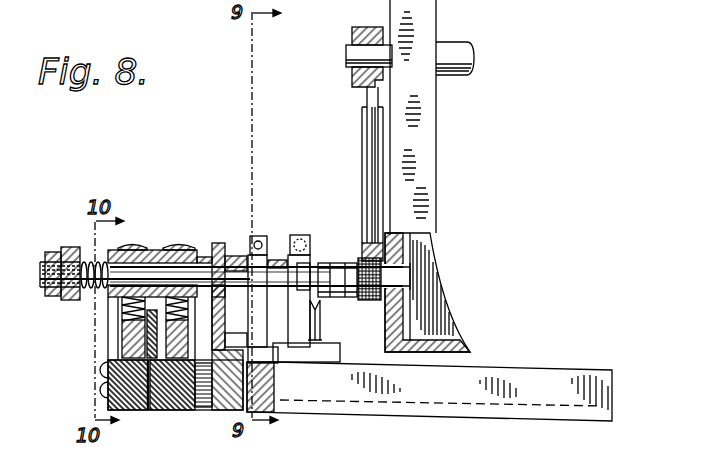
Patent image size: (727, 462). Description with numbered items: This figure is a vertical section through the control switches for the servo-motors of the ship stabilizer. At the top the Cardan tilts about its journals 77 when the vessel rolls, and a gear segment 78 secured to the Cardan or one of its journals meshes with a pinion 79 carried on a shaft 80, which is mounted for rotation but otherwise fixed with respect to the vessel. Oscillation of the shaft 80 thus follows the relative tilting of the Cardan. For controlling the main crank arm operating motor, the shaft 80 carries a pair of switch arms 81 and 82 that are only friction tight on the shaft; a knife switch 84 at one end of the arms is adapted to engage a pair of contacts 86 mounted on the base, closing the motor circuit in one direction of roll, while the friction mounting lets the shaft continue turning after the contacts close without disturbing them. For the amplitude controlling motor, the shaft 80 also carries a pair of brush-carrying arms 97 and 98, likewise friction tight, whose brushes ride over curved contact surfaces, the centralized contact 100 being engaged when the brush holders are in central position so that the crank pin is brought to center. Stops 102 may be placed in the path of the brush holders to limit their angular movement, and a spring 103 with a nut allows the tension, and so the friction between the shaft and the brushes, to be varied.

The journals 77 is at (465, 48).
The gear segment 78 is at (364, 117).
The pinion 79 is at (373, 302).
The shaft 80 is at (410, 282).
The arm 81 is at (304, 276).
The arm 82 is at (267, 260).
The knife switch 84 is at (319, 263).
The contacts 86 is at (322, 321).
The brush-carrying arm 97 is at (123, 338).
The brush-carrying arm 98 is at (180, 328).
The contact 100 is at (104, 362).
The stops 102 is at (120, 319).
The spring 103 is at (92, 254).